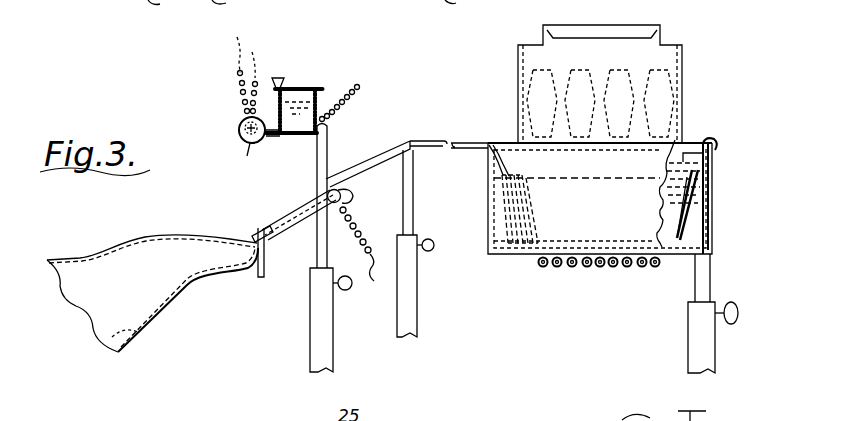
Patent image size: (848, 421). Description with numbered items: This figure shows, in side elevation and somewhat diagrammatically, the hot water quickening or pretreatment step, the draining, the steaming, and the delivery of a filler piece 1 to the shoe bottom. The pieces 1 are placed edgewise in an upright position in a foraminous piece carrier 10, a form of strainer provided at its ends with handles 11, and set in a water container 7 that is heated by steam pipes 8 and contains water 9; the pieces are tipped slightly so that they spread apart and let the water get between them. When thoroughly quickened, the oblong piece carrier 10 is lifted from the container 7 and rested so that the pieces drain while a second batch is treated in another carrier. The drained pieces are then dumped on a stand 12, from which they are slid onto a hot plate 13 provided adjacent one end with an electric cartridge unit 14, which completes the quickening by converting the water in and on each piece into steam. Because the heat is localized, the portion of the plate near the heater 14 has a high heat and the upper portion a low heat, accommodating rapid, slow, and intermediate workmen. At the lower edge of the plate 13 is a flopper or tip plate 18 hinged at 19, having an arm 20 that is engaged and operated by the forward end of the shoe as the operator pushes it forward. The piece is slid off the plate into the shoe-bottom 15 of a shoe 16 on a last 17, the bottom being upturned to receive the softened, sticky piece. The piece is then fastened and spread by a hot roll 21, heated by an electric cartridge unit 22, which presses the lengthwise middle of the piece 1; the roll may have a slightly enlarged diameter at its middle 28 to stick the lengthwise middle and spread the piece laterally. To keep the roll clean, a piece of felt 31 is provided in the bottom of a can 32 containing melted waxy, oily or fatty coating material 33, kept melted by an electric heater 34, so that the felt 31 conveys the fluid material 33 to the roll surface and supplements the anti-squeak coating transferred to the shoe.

The piece 1 is at (665, 70).
The water container 7 is at (653, 160).
The steam pipes 8 is at (626, 266).
The water 9 is at (712, 165).
The foraminous piece carrier 10 is at (684, 72).
The handles 11 is at (643, 30).
The stand 12 is at (436, 142).
The hot plate 13 is at (383, 167).
The electric cartridge unit 14 is at (348, 195).
The shoe-bottom 15 is at (193, 217).
The shoe 16 is at (203, 262).
The last 17 is at (126, 342).
The flopper or tip plate 18 is at (298, 213).
The hinge 19 is at (270, 224).
The arm 20 is at (264, 278).
The hot roll 21 is at (238, 132).
The electric cartridge unit 22 is at (248, 145).
The enlarged middle of roll 28 is at (240, 121).
The felt 31 is at (297, 136).
The can 32 is at (275, 100).
The coating material 33 is at (298, 97).
The electric heater 34 is at (360, 87).